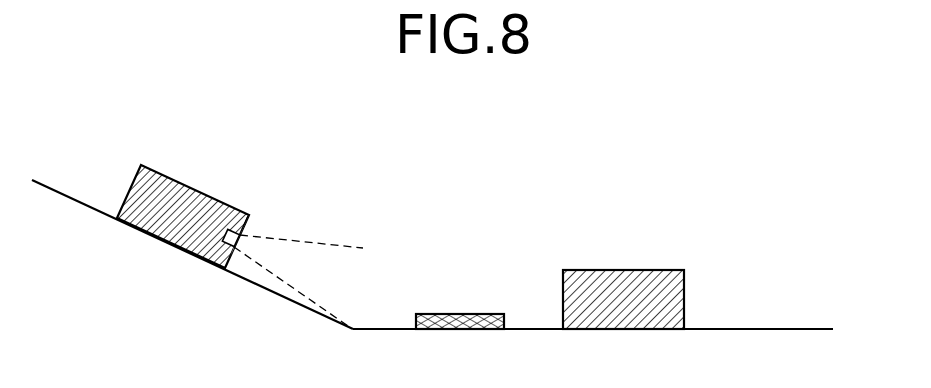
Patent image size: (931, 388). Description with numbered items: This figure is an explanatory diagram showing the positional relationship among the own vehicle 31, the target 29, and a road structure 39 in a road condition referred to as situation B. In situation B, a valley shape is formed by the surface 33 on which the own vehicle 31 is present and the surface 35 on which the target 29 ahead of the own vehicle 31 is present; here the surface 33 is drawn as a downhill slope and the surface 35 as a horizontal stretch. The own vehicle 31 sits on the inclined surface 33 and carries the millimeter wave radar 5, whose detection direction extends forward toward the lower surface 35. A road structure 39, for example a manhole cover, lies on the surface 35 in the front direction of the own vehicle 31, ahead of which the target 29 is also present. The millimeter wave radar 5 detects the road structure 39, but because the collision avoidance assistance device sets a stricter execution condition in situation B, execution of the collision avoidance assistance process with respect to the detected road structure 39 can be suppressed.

The millimeter wave radar 5 is at (250, 216).
The target 29 is at (638, 270).
The own vehicle 31 is at (178, 181).
The surface 33 is at (62, 194).
The surface 35 is at (773, 329).
The road structure 39 is at (458, 314).